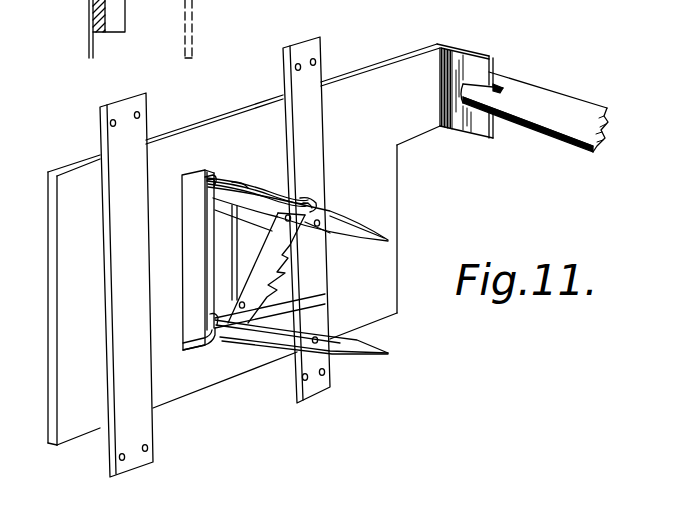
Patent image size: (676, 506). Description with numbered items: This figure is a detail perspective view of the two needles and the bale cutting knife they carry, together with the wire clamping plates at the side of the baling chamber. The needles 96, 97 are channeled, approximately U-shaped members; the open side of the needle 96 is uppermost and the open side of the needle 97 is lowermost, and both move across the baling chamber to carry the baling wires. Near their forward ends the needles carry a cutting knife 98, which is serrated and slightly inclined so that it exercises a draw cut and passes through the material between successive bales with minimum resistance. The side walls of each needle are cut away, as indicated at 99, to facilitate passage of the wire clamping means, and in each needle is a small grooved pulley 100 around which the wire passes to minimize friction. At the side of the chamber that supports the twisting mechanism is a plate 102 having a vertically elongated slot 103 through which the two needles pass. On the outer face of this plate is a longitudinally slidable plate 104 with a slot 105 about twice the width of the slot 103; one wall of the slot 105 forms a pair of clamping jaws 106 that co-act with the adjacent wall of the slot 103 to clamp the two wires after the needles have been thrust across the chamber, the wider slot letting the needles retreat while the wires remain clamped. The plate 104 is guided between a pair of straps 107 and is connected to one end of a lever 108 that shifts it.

The needle 96 is at (367, 222).
The needle 97 is at (361, 351).
The cutting knife 98 is at (285, 272).
The cut away 99 is at (263, 196).
The grooved pulley 100 is at (328, 208).
The plate 102 is at (191, 322).
The slot 103 is at (215, 230).
The slidable plate 104 is at (324, 111).
The slot 105 is at (182, 199).
The clamping jaws 106 is at (216, 172).
The straps 107 is at (307, 82).
The lever 108 is at (557, 103).